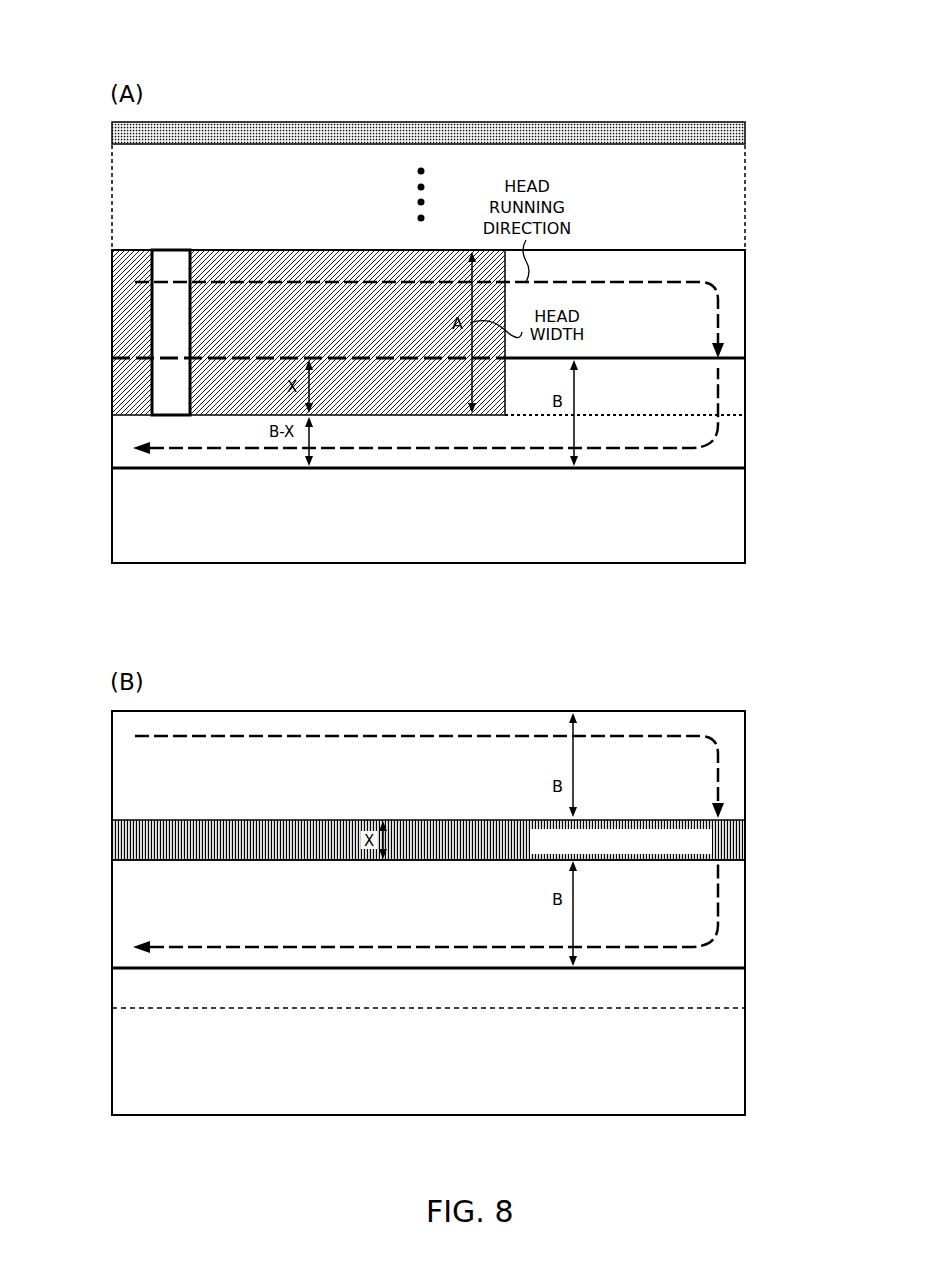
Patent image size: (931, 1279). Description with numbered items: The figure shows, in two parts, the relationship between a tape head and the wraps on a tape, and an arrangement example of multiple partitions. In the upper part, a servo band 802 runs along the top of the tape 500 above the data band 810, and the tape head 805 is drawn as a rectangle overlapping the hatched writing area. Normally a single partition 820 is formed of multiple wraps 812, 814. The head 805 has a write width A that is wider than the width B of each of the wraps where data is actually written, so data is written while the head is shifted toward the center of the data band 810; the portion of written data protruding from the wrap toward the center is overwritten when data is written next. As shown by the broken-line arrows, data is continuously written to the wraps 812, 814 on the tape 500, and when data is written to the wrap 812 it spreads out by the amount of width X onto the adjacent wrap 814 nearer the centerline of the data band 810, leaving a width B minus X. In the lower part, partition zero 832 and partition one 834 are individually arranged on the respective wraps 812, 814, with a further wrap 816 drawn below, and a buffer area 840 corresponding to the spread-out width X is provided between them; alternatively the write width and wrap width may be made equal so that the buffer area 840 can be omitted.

The tape 500 is at (525, 34).
The servo band 802 is at (592, 125).
The tape head 805 is at (178, 258).
The data band 810 is at (98, 562).
The wrap 812 is at (753, 255).
The wrap 814 is at (753, 365).
The wrap 816 is at (753, 1013).
The partition 820 is at (645, 398).
The partition 0 832 is at (468, 799).
The partition 1 834 is at (468, 903).
The buffer area 840 is at (706, 851).